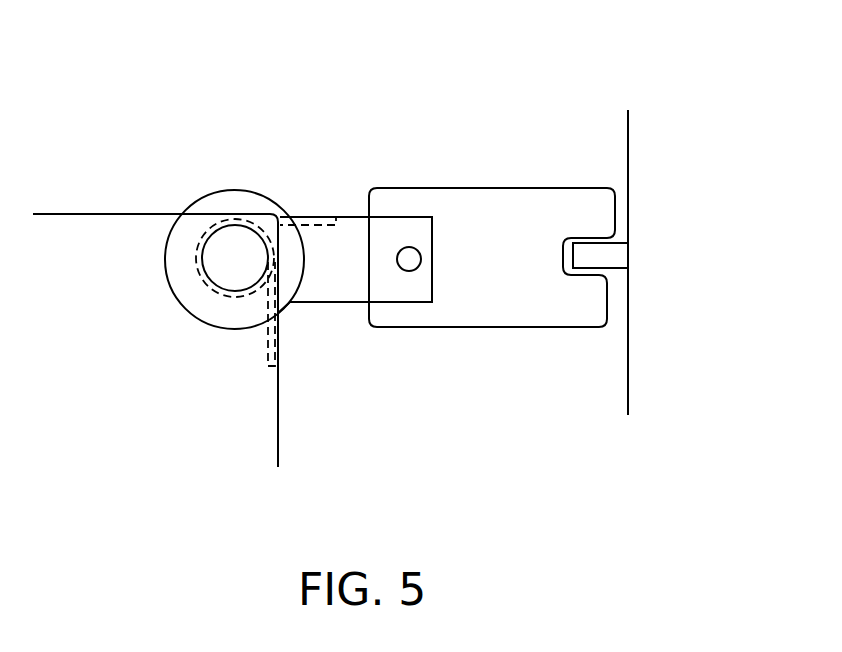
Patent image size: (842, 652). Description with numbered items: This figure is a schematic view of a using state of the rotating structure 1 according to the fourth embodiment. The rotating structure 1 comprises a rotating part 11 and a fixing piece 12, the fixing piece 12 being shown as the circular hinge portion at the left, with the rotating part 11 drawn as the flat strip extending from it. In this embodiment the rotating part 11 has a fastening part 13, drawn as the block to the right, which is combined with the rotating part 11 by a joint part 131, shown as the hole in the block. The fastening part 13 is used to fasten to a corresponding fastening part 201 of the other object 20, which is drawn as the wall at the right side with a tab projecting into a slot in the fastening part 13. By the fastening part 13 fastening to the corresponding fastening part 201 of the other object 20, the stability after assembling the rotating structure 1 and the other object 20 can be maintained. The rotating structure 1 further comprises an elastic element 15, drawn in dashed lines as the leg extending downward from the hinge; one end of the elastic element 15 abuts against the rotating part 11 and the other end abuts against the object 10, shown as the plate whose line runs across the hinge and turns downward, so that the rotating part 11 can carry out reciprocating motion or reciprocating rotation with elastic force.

The rotating structure 1 is at (521, 140).
The object 10 is at (95, 223).
The rotating part 11 is at (327, 215).
The fixing piece 12 is at (213, 228).
The fastening part 13 is at (443, 328).
The joint part 131 is at (409, 250).
The elastic element 15 is at (267, 353).
The other object 20 is at (627, 145).
The corresponding fastening part 201 is at (595, 257).